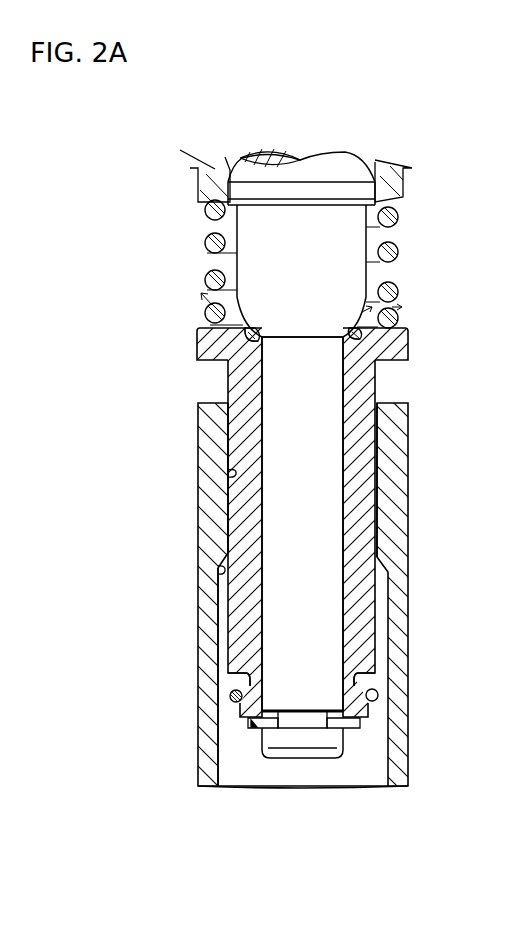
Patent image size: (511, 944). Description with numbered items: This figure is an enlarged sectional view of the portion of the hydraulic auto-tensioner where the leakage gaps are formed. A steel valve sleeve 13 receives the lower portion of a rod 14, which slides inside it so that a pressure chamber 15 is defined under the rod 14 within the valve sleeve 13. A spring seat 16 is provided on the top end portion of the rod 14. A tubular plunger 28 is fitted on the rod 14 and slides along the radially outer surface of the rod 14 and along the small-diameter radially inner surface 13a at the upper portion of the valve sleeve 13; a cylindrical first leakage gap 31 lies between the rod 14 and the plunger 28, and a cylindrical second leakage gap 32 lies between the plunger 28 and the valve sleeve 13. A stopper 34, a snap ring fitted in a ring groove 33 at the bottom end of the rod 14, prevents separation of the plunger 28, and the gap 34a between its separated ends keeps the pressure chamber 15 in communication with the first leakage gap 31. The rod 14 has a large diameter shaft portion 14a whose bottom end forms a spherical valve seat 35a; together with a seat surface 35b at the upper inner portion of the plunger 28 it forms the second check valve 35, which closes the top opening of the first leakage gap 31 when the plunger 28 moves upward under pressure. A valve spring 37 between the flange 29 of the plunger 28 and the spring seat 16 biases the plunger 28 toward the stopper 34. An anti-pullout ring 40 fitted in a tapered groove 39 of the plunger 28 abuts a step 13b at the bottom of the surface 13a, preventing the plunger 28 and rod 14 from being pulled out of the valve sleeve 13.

The valve sleeve 13 is at (210, 610).
The small-diameter radially inner surface 13a is at (233, 475).
The step 13b is at (222, 572).
The rod 14 is at (270, 430).
The large diameter shaft portion 14a is at (243, 226).
The pressure chamber 15 is at (315, 770).
The spring seat 16 is at (218, 170).
The tubular plunger 28 is at (243, 380).
The flange 29 is at (205, 340).
The first leakage gap 31 is at (347, 436).
The second leakage gap 32 is at (377, 502).
The ring groove 33 is at (270, 728).
The stopper 34 is at (243, 727).
The gap 34a is at (356, 733).
The second check valve 35 is at (398, 293).
The valve seat 35a is at (260, 335).
The seat surface 35b is at (360, 331).
The valve spring 37 is at (398, 249).
The tapered groove 39 is at (243, 682).
The anti-pullout ring 40 is at (232, 698).